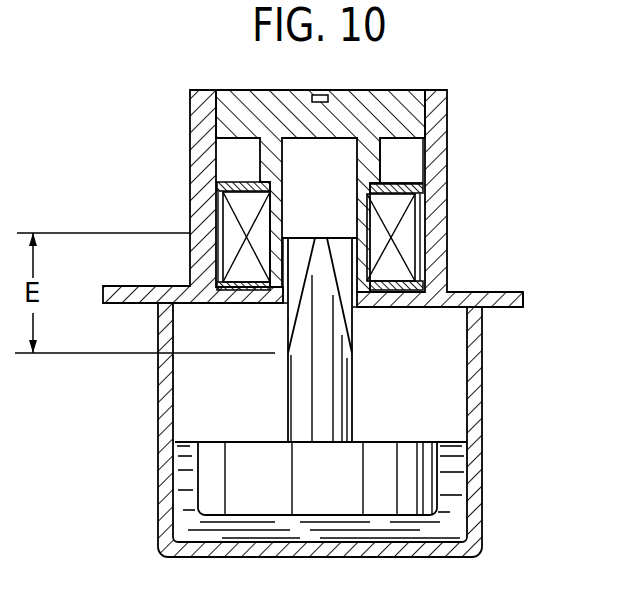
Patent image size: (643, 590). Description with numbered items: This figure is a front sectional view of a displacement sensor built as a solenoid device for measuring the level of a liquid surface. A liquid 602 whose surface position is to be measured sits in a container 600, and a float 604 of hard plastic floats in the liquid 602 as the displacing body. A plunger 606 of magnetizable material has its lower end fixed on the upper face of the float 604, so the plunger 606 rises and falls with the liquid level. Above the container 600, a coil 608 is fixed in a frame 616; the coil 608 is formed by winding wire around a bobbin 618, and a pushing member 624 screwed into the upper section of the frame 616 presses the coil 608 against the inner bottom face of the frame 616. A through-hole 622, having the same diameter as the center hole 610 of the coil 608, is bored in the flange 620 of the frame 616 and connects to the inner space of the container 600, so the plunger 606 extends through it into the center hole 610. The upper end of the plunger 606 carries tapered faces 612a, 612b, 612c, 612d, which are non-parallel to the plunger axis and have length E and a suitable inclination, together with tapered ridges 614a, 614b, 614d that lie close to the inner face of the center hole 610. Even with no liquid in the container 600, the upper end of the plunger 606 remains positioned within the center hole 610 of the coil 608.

The container 600 is at (160, 492).
The liquid 602 is at (185, 478).
The float 604 is at (375, 483).
The plunger 606 is at (360, 427).
The coil 608 is at (430, 230).
The center hole 610 is at (297, 209).
The tapered face 612a is at (352, 338).
The tapered face 612b is at (287, 330).
The tapered face 612c is at (410, 226).
The tapered face 612d is at (300, 257).
The tapered ridge 614a is at (340, 250).
The tapered ridge 614b is at (355, 328).
The tapered ridge 614d is at (287, 315).
The frame 616 is at (190, 120).
The bobbin 618 is at (407, 168).
The flange 620 is at (523, 298).
The through-hole 622 is at (355, 318).
The pushing member 624 is at (228, 90).